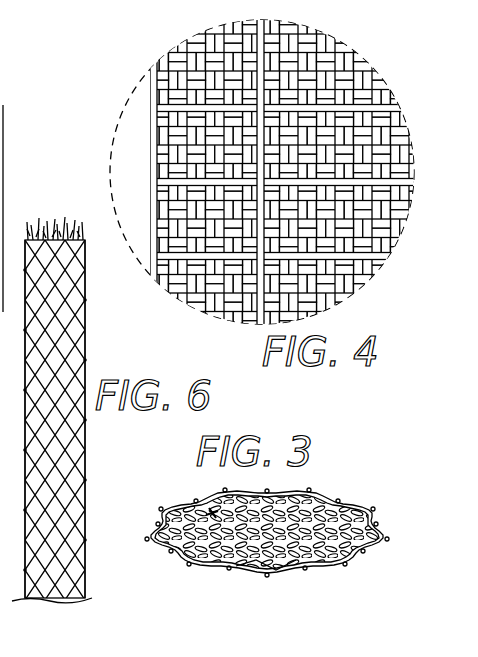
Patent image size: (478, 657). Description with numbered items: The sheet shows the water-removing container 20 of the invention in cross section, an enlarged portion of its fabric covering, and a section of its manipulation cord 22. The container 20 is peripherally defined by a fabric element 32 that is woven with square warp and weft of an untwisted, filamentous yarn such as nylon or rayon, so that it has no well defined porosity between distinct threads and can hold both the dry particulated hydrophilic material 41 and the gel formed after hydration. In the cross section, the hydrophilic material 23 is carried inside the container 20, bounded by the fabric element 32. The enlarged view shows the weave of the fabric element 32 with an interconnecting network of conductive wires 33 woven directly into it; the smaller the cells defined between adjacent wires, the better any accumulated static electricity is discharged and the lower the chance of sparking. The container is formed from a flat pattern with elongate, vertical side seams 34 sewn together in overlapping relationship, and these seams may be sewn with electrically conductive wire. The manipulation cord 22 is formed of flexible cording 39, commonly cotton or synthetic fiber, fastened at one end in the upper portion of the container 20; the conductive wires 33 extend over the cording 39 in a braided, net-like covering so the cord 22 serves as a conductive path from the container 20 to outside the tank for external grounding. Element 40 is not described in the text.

In FIG. 4, the container 20 is at (257, 173).
In FIG. 3, the container 20 is at (268, 533).
In FIG. 6, the manipulation cord 22 is at (69, 399).
In FIG. 3, the hydrophilic material 23 is at (212, 511).
In FIG. 4, the fabric element 32 is at (200, 90).
In FIG. 3, the fabric element 32 is at (208, 560).
In FIG. 4, the conductive wires 33 is at (158, 156).
In FIG. 3, the conductive wires 33 is at (248, 560).
In FIG. 6, the side seams 34 is at (4, 163).
In FIG. 6, the flexible cording 39 is at (48, 246).
In FIG. 6, the braided structure 40 is at (86, 447).
In FIG. 3, the particulated hydrophilic material 41 is at (351, 558).